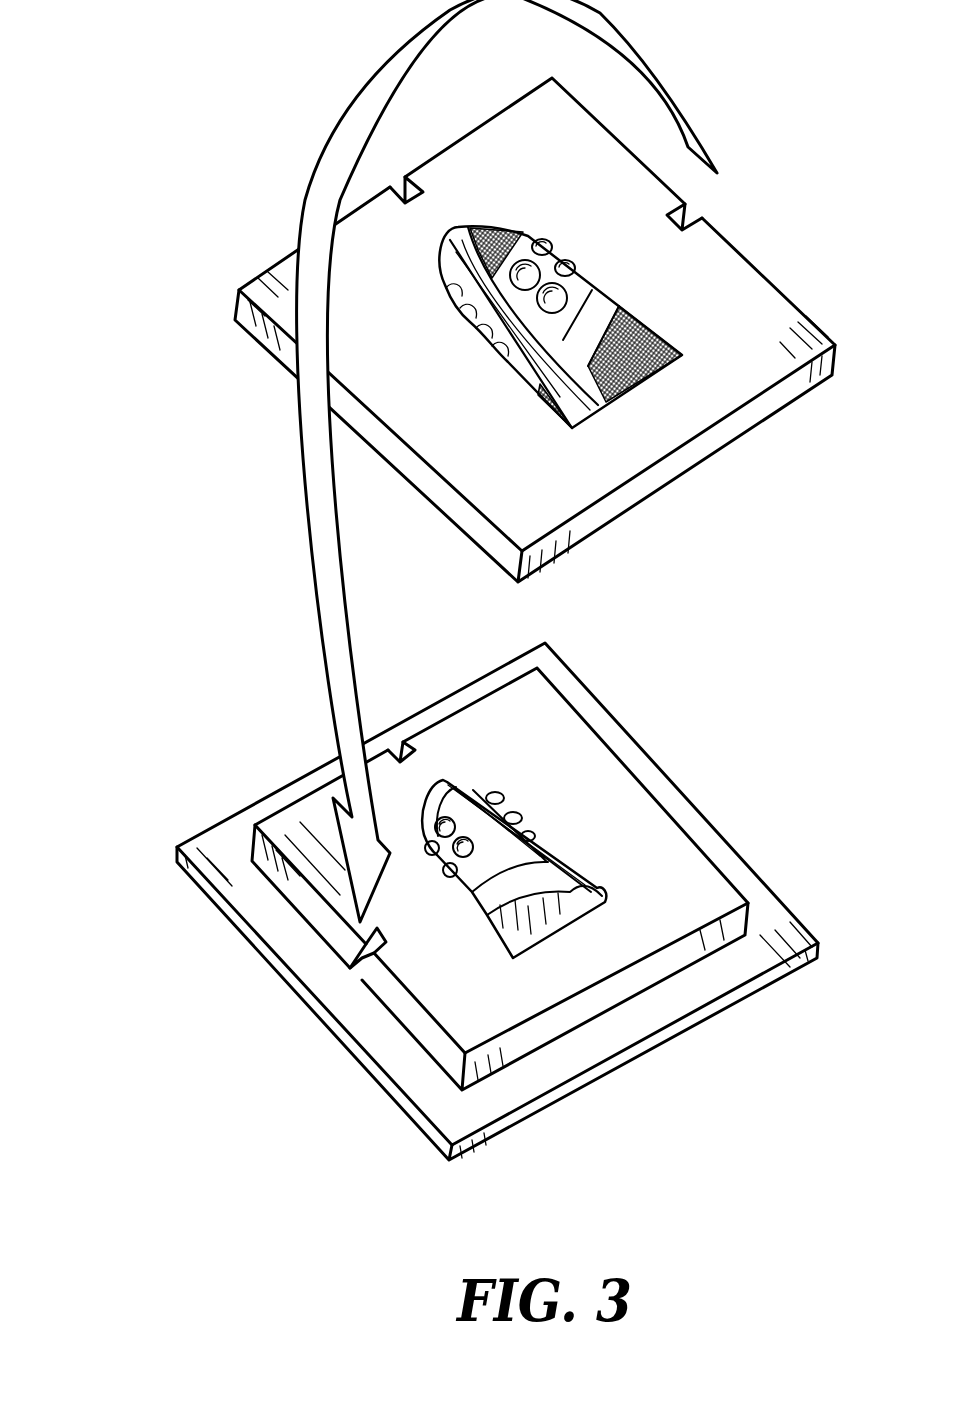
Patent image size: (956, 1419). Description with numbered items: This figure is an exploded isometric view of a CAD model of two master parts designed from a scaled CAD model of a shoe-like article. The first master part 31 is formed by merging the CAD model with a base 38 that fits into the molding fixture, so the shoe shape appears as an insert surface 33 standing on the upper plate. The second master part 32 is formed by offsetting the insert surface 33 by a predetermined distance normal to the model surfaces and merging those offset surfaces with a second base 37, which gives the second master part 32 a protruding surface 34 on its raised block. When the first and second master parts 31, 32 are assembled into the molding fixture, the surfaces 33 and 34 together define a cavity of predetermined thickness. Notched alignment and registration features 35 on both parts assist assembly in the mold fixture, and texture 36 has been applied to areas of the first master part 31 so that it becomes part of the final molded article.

The first master part 31 is at (463, 330).
The second master part 32 is at (426, 901).
The insert surface 33 is at (648, 251).
The protruding surface 34 is at (553, 857).
The alignment and registration features 35 is at (392, 180).
The texture 36 is at (495, 240).
The second base 37 is at (237, 827).
The base 38 is at (686, 412).